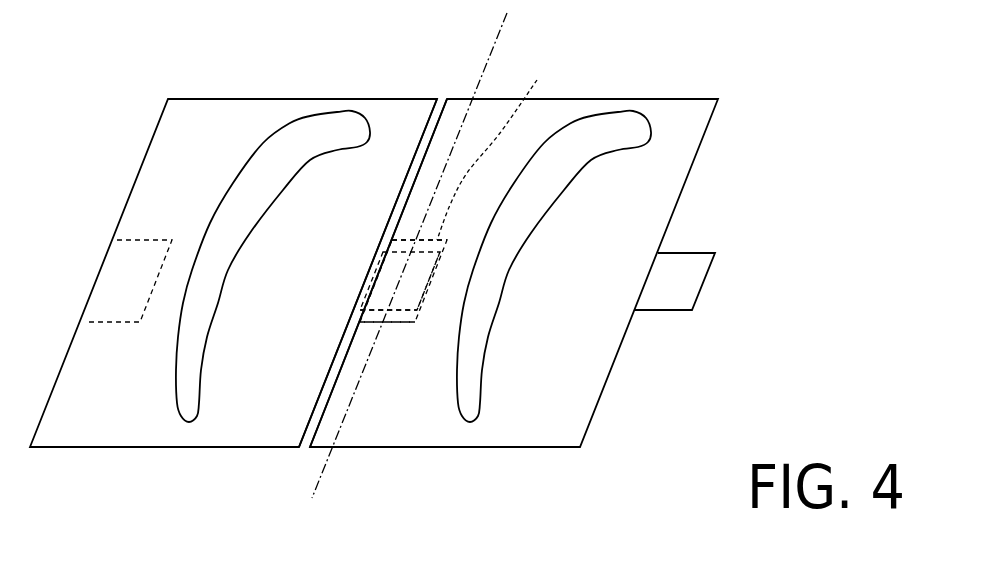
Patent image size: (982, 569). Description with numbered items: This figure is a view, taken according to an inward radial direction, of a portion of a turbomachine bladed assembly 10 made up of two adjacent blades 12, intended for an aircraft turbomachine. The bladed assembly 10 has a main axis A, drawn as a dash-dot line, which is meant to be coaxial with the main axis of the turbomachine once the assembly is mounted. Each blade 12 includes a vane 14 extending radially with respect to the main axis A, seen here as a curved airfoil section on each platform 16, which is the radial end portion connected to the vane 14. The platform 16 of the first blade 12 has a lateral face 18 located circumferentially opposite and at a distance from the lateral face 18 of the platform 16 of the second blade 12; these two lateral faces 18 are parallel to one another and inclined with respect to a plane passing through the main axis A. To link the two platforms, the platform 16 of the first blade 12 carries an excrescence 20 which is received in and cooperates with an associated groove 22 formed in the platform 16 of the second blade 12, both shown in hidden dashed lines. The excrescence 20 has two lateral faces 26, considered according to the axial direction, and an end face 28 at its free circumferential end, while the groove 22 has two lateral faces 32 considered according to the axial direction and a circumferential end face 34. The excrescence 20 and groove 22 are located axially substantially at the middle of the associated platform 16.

The turbomachine bladed assembly 10 is at (625, 455).
The blade 12 is at (195, 97).
The vane 14 is at (220, 187).
The platform 16 is at (138, 458).
The lateral face 18 is at (318, 420).
The excrescence 20 is at (414, 280).
The groove 22 is at (412, 336).
The lateral faces of the excrescence 26 is at (402, 253).
The end face of the excrescence 28 is at (432, 258).
The lateral faces of the groove 32 is at (499, 145).
The circumferential end face of the groove 34 is at (420, 305).
The main axis A is at (490, 42).